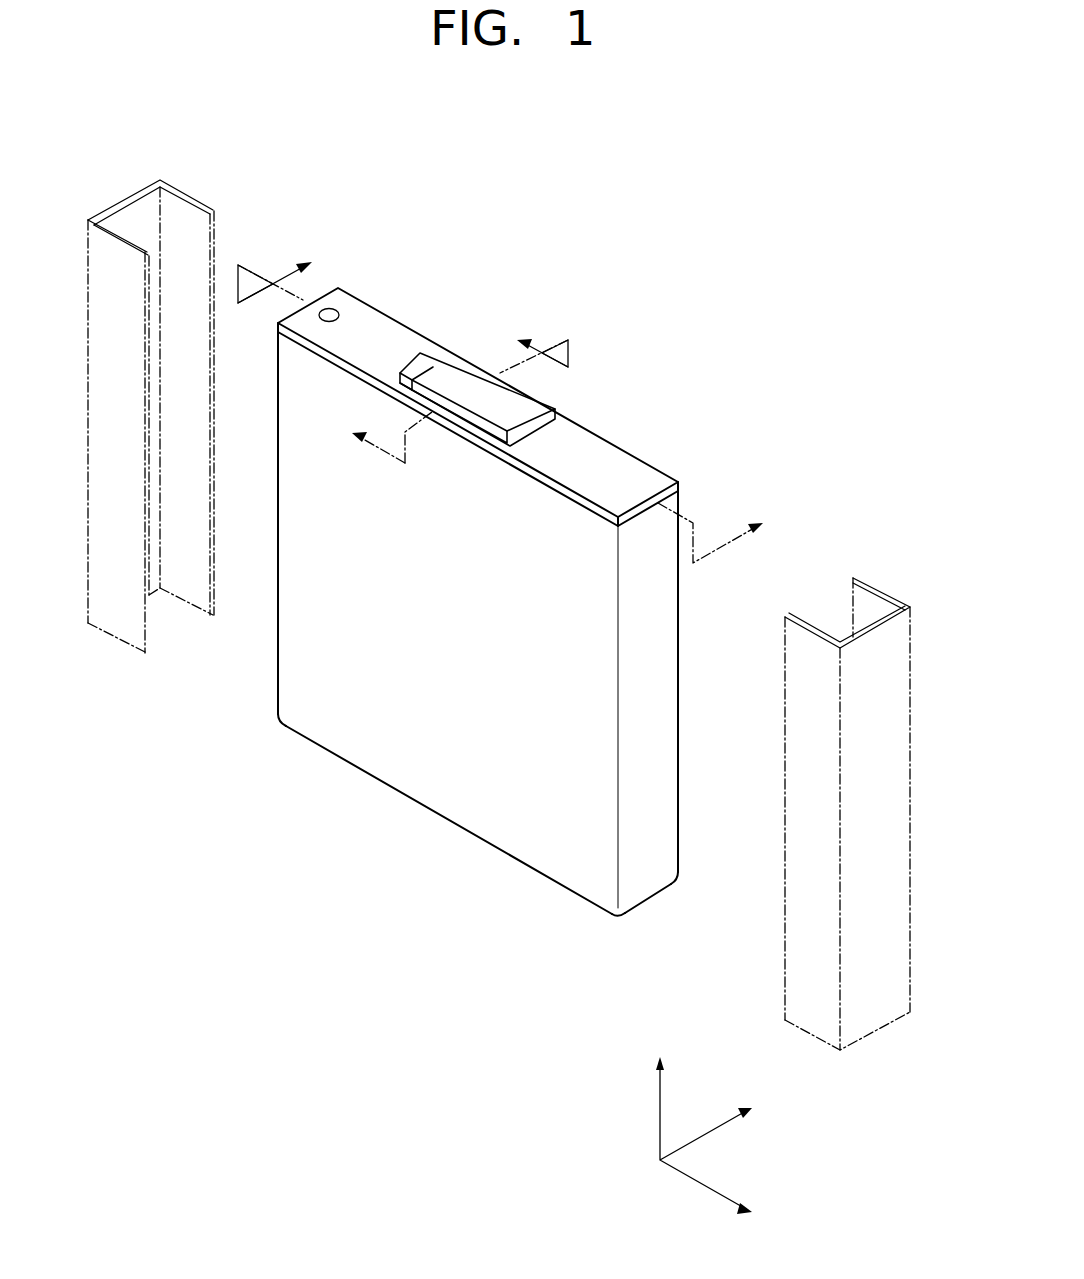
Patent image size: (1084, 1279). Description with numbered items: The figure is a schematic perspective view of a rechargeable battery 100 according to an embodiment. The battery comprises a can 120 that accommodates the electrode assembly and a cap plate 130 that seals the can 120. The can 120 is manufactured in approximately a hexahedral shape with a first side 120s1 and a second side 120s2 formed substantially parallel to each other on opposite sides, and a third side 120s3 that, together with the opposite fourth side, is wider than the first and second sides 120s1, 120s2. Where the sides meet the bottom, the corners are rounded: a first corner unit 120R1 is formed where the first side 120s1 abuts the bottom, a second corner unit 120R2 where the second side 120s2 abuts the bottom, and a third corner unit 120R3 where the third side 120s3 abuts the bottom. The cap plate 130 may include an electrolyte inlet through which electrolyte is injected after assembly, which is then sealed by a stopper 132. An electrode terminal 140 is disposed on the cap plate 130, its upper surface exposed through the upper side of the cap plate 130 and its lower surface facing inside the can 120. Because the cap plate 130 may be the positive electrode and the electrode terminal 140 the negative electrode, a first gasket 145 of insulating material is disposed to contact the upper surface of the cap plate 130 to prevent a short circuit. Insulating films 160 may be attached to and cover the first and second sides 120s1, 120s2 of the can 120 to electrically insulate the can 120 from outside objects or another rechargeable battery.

The rechargeable battery 100 is at (686, 345).
The can 120 is at (456, 836).
The first side 120s1 is at (277, 617).
The second side 120s2 is at (668, 708).
The third side 120s3 is at (395, 760).
The first corner unit 120R1 is at (278, 722).
The second corner unit 120R2 is at (655, 900).
The third corner unit 120R3 is at (533, 873).
The cap plate 130 is at (583, 450).
The stopper 132 is at (338, 308).
The electrode terminal 140 is at (470, 372).
The first gasket 145 is at (435, 372).
The insulating film 160 is at (180, 203).